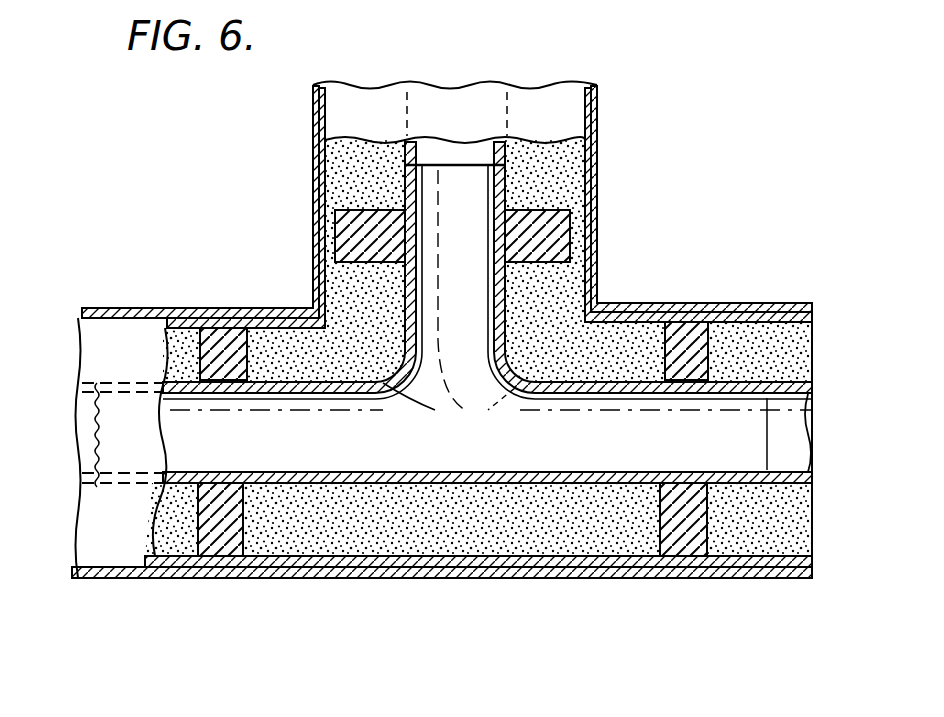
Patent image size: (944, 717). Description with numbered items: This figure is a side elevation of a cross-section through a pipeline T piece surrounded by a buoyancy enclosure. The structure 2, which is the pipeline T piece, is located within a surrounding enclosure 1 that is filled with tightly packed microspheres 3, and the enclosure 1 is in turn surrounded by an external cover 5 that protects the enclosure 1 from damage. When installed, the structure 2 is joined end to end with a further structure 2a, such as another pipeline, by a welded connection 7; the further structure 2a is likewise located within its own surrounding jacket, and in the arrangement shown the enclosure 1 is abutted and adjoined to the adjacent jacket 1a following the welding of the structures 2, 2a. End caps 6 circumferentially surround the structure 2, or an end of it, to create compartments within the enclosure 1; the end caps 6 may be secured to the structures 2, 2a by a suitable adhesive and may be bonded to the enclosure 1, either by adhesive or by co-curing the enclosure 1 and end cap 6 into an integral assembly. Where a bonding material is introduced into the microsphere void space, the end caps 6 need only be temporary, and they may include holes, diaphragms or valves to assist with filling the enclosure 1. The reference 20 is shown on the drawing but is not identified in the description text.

The enclosure 1 is at (580, 278).
The adjacent jacket 1a is at (580, 173).
The structure 2 is at (435, 452).
The further structure 2a is at (518, 97).
The microspheres 3 is at (345, 166).
The external cover 5 is at (637, 300).
The end cap 6 is at (548, 242).
The welded connection 7 is at (72, 400).
The tee pipe fitting 20 is at (75, 508).